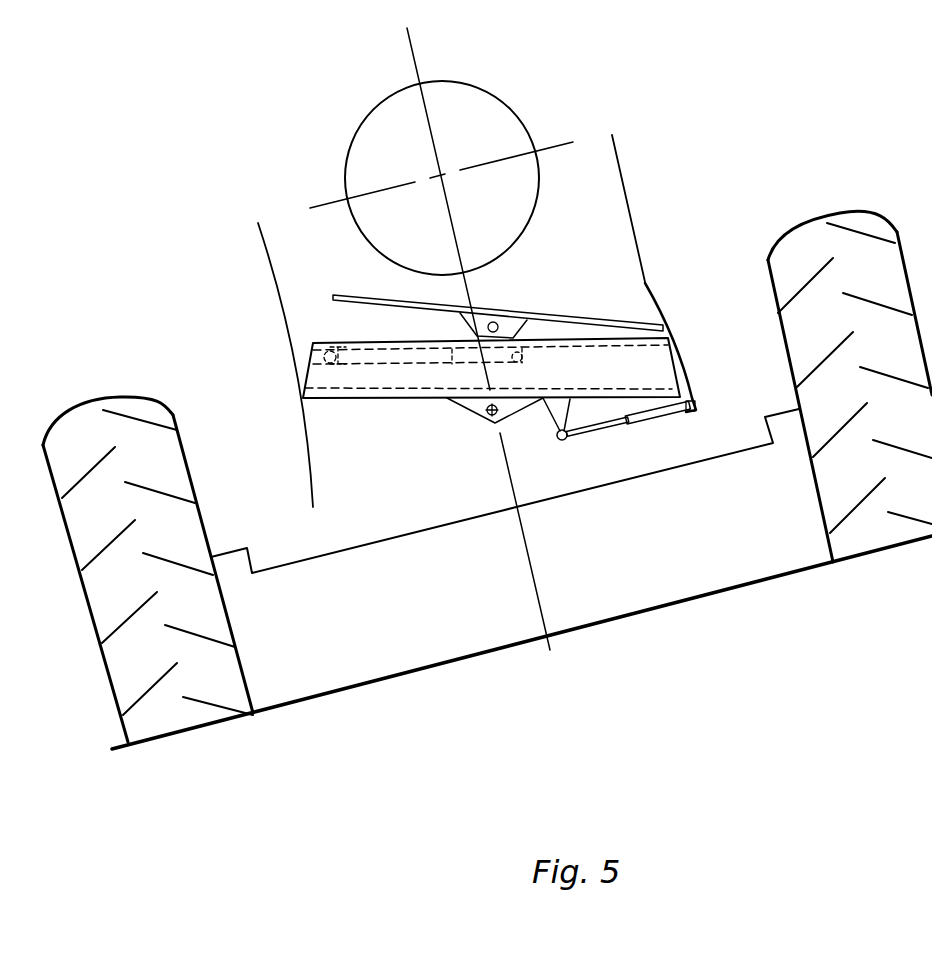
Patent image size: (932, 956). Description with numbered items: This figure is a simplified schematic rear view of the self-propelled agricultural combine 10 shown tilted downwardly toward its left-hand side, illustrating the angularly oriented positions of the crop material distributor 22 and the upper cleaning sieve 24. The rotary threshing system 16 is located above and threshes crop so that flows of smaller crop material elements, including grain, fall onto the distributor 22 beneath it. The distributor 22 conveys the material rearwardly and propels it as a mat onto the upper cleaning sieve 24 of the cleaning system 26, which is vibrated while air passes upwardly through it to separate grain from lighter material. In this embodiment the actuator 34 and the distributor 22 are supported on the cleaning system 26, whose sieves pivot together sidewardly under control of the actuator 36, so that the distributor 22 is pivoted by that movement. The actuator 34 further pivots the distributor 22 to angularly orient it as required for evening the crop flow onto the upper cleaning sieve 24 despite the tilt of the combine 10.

The self-propelled agricultural combine 10 is at (834, 109).
The rotary threshing system 16 is at (518, 102).
The crop material distributor 22 is at (556, 318).
The upper cleaning sieve 24 is at (318, 344).
The cleaning system 26 is at (684, 347).
The actuator 34 is at (397, 368).
The actuator 36 is at (640, 418).